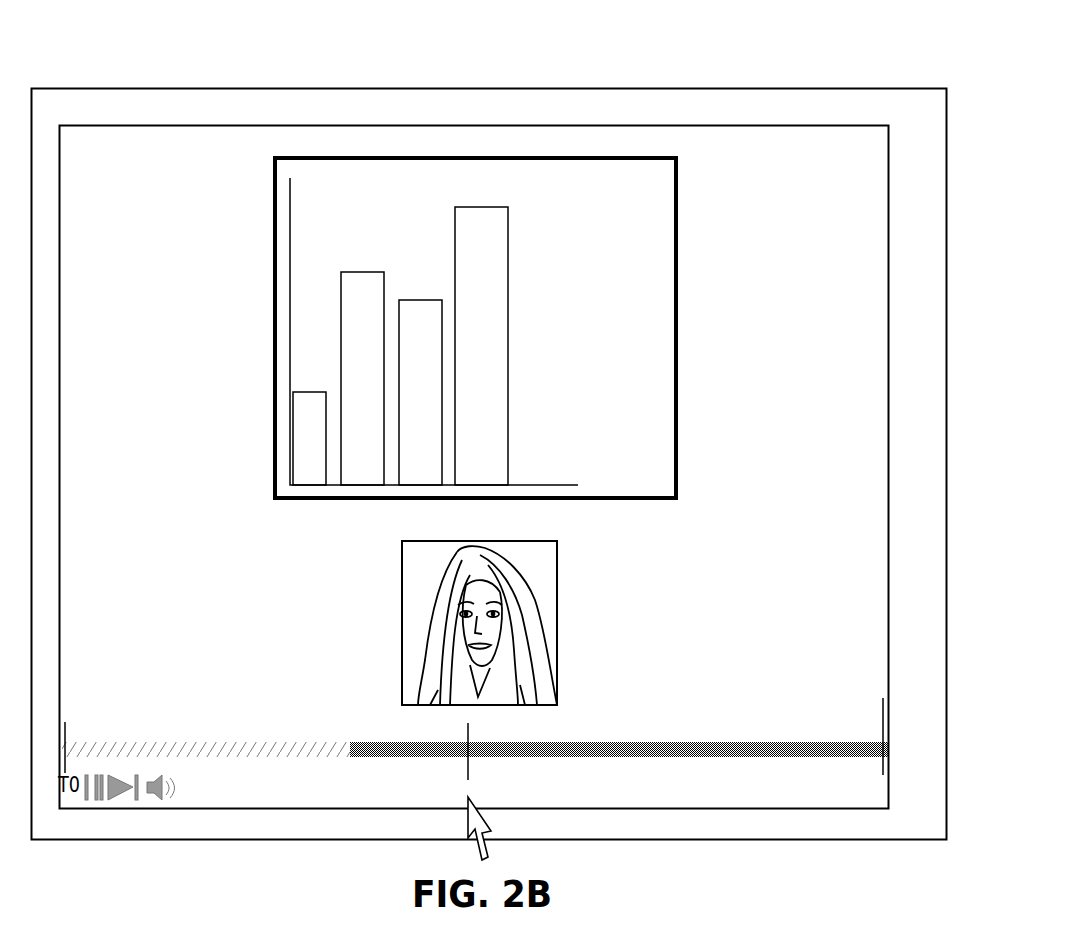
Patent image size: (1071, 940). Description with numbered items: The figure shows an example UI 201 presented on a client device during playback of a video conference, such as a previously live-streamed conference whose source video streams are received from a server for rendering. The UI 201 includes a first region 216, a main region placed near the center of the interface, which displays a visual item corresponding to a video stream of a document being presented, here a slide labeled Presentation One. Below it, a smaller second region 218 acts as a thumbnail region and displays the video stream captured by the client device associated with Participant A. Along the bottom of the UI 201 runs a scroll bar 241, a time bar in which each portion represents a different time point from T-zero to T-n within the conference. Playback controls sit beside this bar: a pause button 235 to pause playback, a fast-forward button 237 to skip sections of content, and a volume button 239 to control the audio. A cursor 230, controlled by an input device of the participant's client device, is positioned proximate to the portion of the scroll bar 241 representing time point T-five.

The UI 201 is at (760, 76).
The first region 216 is at (271, 313).
The second region 218 is at (363, 646).
The cursor 230 is at (489, 779).
The pause button 235 is at (106, 802).
The fast-forward button 237 is at (139, 805).
The volume button 239 is at (186, 780).
The scroll bar 241 is at (895, 742).